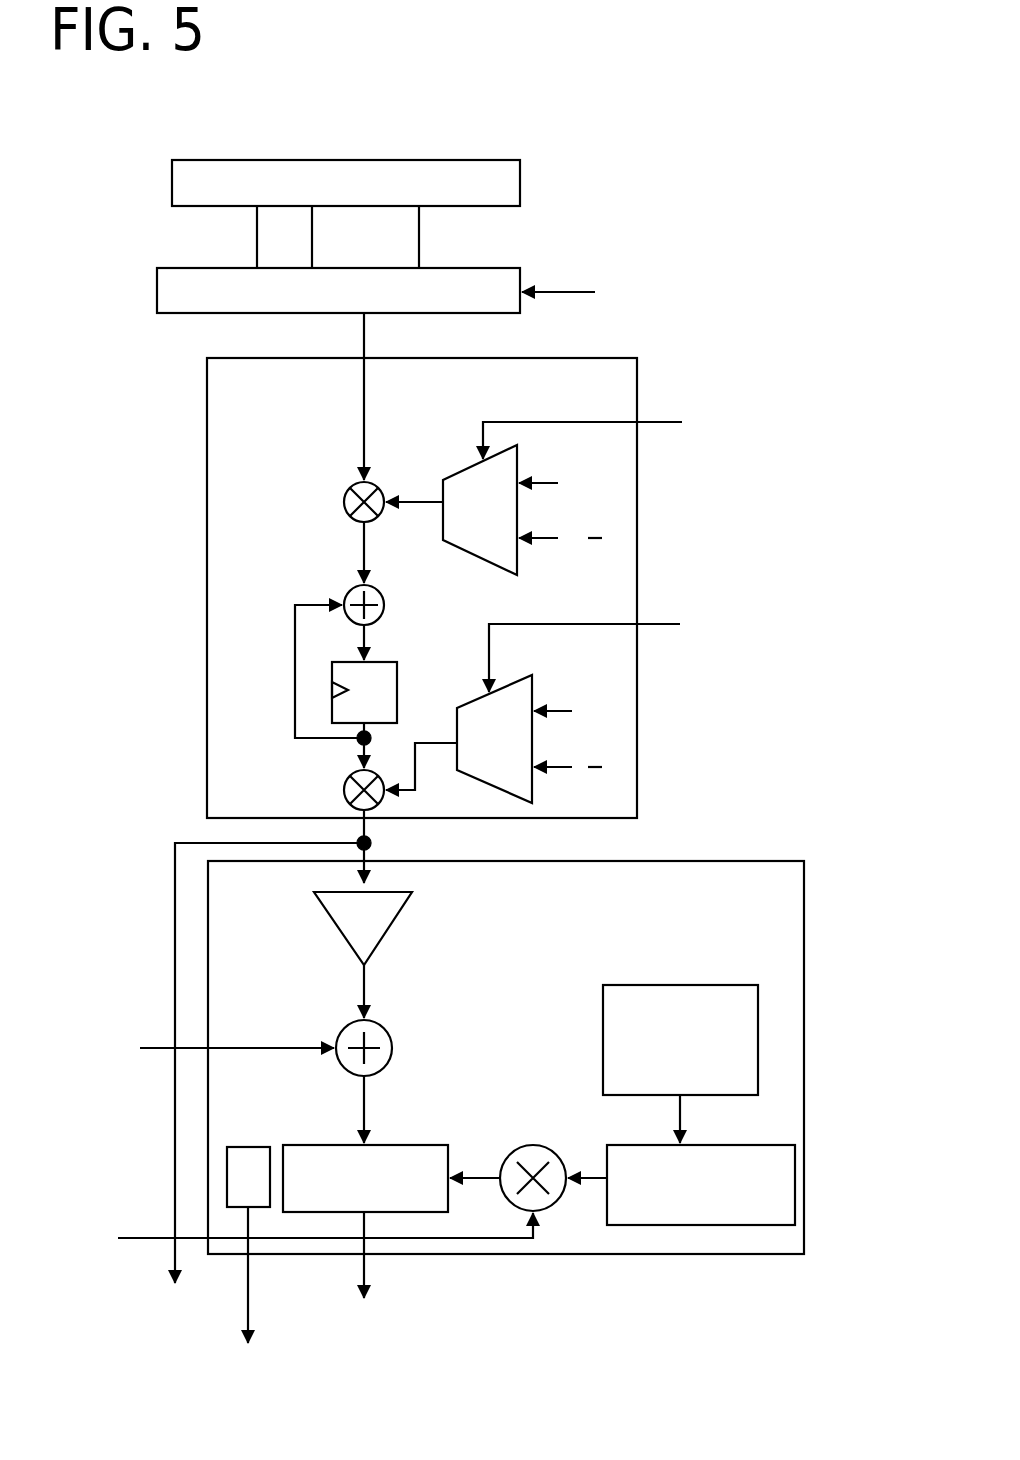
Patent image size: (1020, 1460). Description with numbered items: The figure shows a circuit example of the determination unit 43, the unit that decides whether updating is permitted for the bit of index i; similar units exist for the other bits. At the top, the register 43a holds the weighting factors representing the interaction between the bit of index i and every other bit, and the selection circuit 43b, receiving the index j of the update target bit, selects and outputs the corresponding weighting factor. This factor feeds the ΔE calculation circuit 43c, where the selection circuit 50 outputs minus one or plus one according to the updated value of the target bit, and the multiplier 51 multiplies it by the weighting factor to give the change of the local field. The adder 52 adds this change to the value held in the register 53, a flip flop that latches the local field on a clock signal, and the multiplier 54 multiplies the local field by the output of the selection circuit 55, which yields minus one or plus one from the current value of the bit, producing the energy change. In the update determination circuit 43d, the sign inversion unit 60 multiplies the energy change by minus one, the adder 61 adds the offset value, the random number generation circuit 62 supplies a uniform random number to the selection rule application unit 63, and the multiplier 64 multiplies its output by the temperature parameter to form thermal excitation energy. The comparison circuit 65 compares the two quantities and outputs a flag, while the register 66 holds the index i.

The determination unit 43 is at (457, 732).
The register 43a is at (478, 160).
The selection circuit 43b is at (473, 268).
The ΔE calculation circuit 43c is at (597, 358).
The update determination circuit 43d is at (717, 860).
The selection circuit 50 is at (472, 462).
The multiplier 51 is at (344, 502).
The adder 52 is at (345, 590).
The register 53 is at (332, 670).
The multiplier 54 is at (344, 790).
The selection circuit 55 is at (520, 674).
The sign inversion unit 60 is at (326, 920).
The adder 61 is at (388, 1032).
The random number generation circuit 62 is at (708, 985).
The selection rule application unit 63 is at (725, 1145).
The multiplier 64 is at (535, 1145).
The comparison circuit 65 is at (388, 1145).
The register 66 is at (248, 1146).